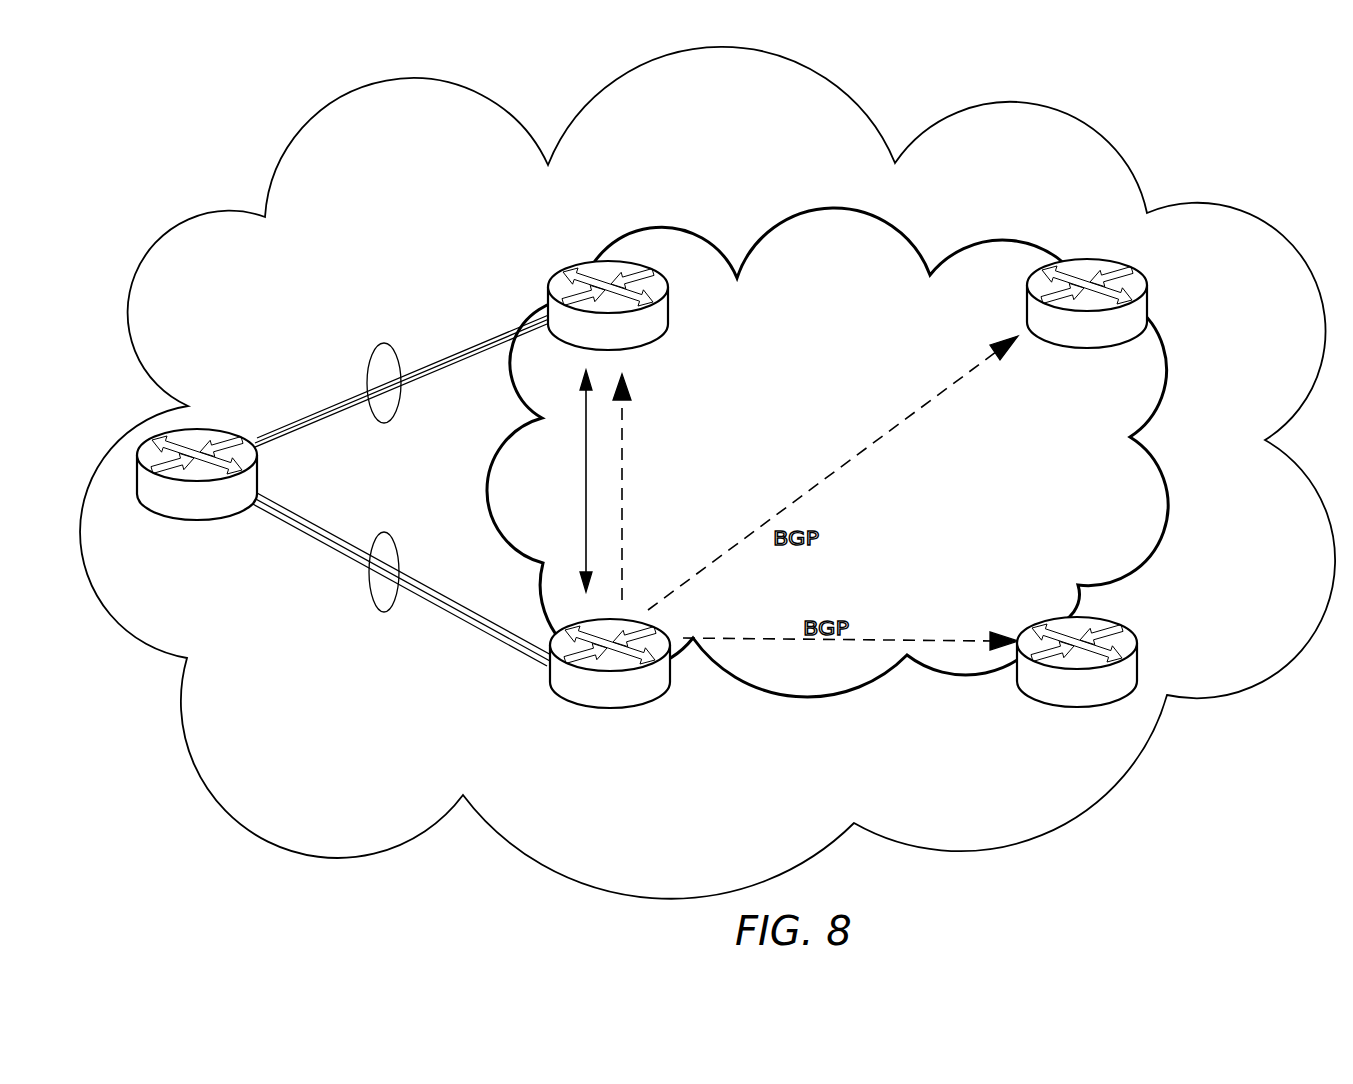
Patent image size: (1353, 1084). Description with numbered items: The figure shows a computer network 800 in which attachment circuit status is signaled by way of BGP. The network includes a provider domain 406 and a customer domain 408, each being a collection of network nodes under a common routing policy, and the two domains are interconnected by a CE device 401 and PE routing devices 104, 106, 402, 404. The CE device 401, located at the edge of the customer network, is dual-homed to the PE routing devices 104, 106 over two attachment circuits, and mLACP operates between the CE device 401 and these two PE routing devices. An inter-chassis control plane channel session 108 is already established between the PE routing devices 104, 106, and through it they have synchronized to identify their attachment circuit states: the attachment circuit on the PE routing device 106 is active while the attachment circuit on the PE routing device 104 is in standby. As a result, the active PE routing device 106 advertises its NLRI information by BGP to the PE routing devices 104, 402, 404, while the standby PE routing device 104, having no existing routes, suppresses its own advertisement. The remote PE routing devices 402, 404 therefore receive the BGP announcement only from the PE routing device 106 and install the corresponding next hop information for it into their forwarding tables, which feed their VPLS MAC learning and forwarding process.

The PE routing device 104 is at (609, 261).
The PE routing device 106 is at (618, 709).
The inter-chassis control plane channel session 108 is at (592, 517).
The CE device 401 is at (204, 428).
The PE routing device 402 is at (1093, 259).
The PE routing device 404 is at (1068, 708).
The provider domain 406 is at (991, 508).
The customer domain 408 is at (395, 681).
The computer network 800 is at (1188, 178).